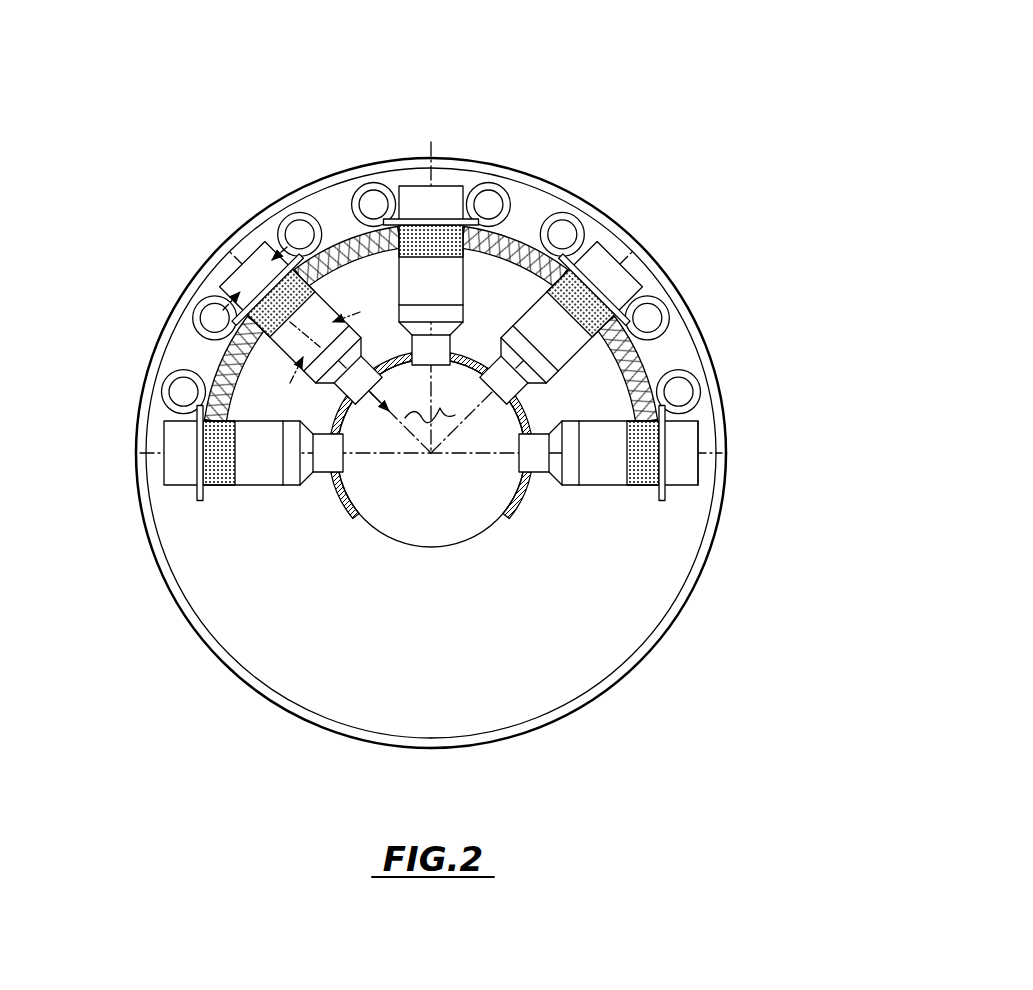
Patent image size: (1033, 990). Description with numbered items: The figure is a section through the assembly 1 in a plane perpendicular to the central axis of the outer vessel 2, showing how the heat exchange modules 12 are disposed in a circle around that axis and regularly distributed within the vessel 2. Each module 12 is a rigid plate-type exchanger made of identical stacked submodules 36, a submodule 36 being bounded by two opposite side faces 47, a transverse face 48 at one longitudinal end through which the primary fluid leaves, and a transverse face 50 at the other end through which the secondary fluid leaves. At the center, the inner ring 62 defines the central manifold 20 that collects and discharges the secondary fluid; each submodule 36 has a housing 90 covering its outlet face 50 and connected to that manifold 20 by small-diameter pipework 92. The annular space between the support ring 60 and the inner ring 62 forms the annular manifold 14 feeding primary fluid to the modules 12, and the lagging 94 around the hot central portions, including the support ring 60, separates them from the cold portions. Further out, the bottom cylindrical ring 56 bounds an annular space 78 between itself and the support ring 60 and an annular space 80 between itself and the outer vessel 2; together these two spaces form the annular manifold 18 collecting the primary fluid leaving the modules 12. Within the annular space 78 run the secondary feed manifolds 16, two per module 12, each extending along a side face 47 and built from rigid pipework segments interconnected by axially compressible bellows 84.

The assembly 1 is at (613, 130).
The outer vessel 2 is at (387, 158).
The heat exchange module 12 is at (615, 297).
The annular manifold 14 is at (451, 275).
The secondary feed manifold 16 is at (707, 363).
The annular manifold 18 is at (712, 418).
The central manifold 20 is at (431, 443).
The submodule 36 is at (598, 255).
The side face 47 is at (652, 482).
The transverse face 48 is at (700, 445).
The transverse face 50 is at (573, 482).
The bottom cylindrical ring 56 is at (700, 590).
The support ring 60 is at (232, 380).
The inner ring 62 is at (376, 545).
The annular space 78 is at (518, 185).
The annular space 80 is at (480, 167).
The bellows 84 is at (287, 222).
The housing 90 is at (288, 480).
The pipework 92 is at (338, 460).
The lagging 94 is at (220, 368).